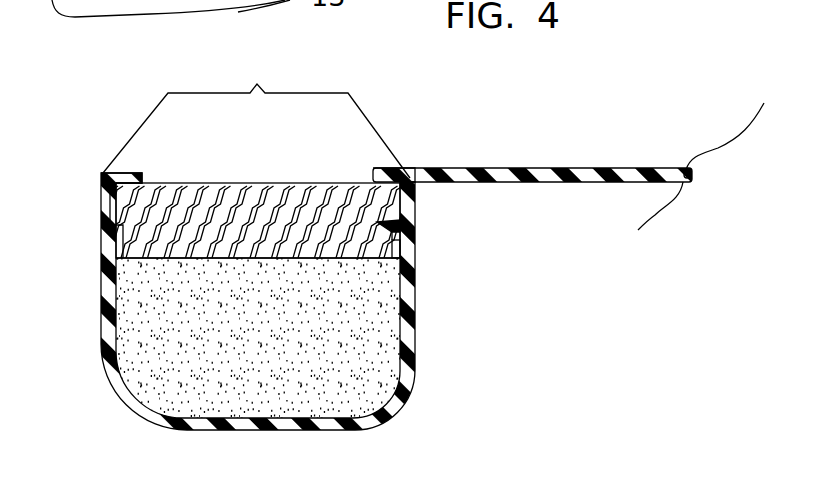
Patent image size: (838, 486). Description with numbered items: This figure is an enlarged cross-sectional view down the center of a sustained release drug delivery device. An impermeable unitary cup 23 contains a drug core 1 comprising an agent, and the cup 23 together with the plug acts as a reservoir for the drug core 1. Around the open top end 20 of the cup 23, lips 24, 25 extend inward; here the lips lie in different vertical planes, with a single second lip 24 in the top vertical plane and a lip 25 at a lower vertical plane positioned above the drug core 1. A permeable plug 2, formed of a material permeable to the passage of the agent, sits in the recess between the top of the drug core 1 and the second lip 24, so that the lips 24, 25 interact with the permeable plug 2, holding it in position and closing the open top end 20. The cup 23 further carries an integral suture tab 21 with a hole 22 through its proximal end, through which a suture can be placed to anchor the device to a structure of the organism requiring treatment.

The drug core 1 is at (300, 340).
The permeable plug 2 is at (298, 197).
The open top end 20 is at (256, 116).
The integral suture tab 21 is at (602, 168).
The hole 22 is at (692, 180).
The impermeable unitary cup 23 is at (225, 430).
The second lip 24 is at (407, 172).
The lip 25 is at (378, 222).